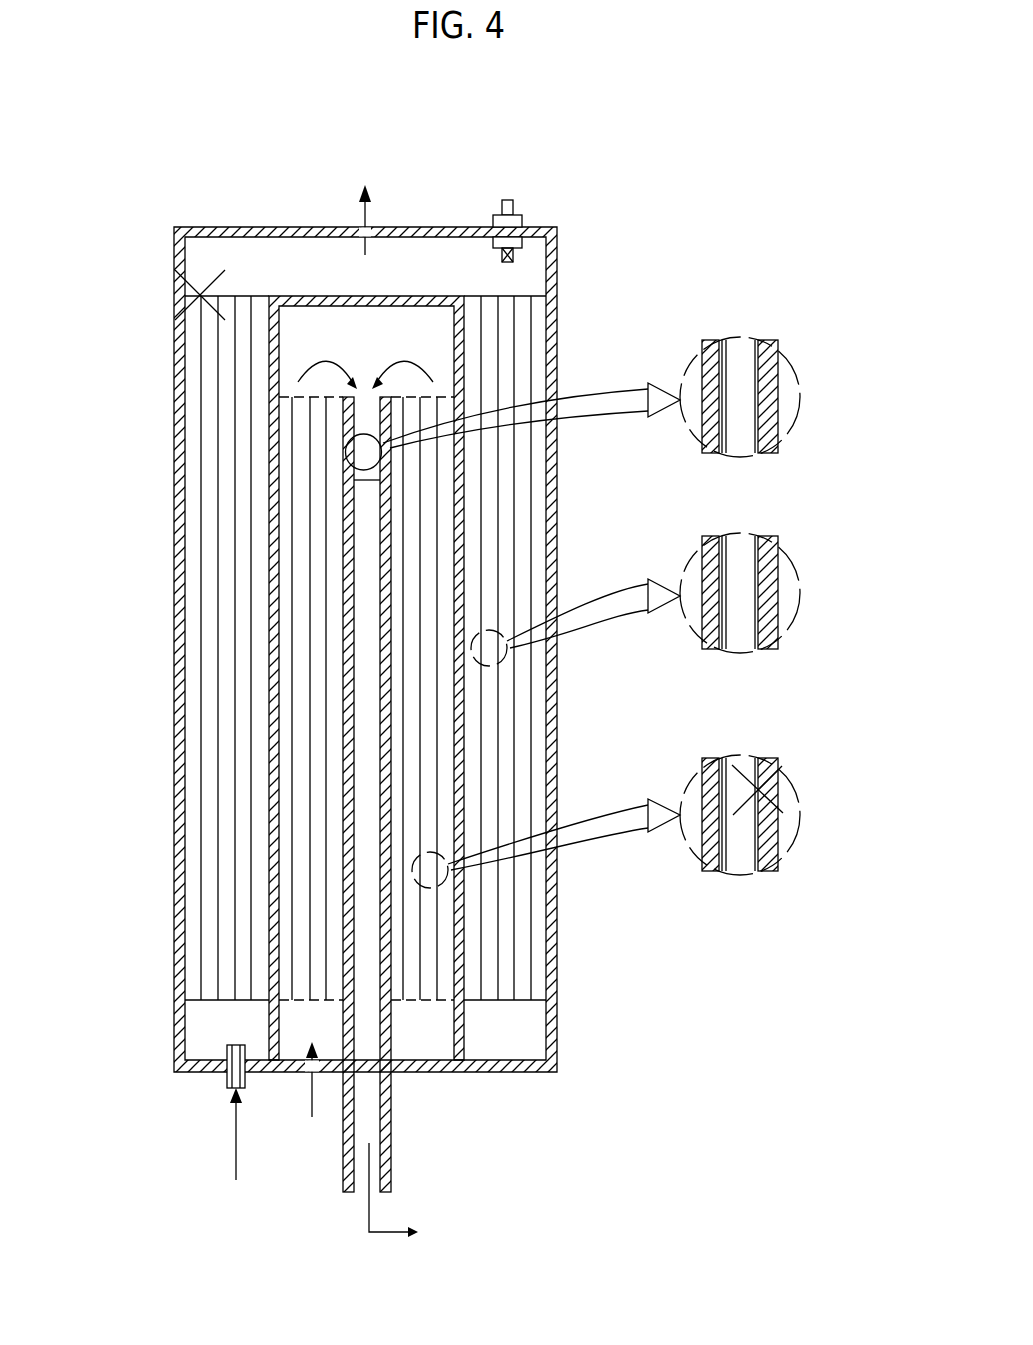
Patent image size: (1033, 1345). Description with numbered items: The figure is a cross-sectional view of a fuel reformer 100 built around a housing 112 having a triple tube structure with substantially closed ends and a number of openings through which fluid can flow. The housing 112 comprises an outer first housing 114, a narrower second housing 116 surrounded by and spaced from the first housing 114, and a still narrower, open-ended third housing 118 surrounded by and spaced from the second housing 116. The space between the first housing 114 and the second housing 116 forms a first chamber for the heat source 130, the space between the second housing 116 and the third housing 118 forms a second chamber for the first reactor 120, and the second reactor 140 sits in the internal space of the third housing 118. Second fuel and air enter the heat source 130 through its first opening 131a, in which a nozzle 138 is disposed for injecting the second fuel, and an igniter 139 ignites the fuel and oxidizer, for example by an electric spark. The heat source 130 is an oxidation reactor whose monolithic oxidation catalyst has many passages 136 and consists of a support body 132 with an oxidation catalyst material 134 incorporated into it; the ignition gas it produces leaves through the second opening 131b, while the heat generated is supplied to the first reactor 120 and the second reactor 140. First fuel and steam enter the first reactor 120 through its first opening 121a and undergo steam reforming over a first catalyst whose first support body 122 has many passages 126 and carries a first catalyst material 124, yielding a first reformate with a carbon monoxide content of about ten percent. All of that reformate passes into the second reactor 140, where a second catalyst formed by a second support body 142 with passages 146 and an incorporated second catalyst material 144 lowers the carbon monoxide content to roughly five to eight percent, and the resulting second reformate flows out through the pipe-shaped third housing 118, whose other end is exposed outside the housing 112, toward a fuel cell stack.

The fuel reformer 100 is at (203, 160).
The housing 112 is at (572, 243).
The first housing 114 is at (557, 273).
The second housing 116 is at (460, 346).
The third housing 118 is at (393, 1121).
The first reactor 120 is at (455, 702).
The first opening 121a is at (303, 1056).
The first support body 122 is at (765, 768).
The first catalyst material 124 is at (778, 828).
The passages 126 is at (740, 761).
The heat source 130 is at (552, 539).
The first opening 131a is at (222, 1068).
The second opening 131b is at (374, 236).
The support body 132 is at (765, 548).
The oxidation catalyst material 134 is at (776, 610).
The passages 136 is at (739, 541).
The nozzle 138 is at (230, 1085).
The igniter 139 is at (507, 201).
The second reactor 140 is at (365, 400).
The second support body 142 is at (765, 352).
The second catalyst material 144 is at (776, 413).
The passages 146 is at (737, 345).